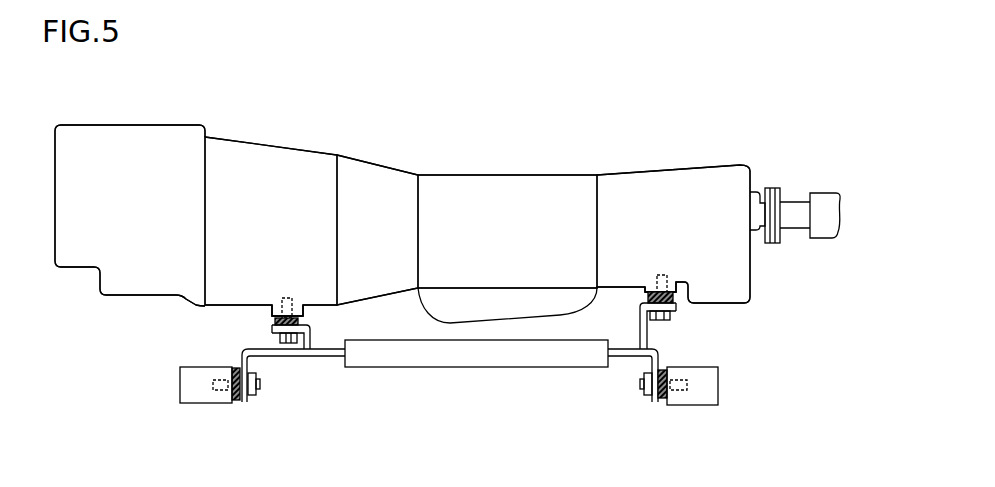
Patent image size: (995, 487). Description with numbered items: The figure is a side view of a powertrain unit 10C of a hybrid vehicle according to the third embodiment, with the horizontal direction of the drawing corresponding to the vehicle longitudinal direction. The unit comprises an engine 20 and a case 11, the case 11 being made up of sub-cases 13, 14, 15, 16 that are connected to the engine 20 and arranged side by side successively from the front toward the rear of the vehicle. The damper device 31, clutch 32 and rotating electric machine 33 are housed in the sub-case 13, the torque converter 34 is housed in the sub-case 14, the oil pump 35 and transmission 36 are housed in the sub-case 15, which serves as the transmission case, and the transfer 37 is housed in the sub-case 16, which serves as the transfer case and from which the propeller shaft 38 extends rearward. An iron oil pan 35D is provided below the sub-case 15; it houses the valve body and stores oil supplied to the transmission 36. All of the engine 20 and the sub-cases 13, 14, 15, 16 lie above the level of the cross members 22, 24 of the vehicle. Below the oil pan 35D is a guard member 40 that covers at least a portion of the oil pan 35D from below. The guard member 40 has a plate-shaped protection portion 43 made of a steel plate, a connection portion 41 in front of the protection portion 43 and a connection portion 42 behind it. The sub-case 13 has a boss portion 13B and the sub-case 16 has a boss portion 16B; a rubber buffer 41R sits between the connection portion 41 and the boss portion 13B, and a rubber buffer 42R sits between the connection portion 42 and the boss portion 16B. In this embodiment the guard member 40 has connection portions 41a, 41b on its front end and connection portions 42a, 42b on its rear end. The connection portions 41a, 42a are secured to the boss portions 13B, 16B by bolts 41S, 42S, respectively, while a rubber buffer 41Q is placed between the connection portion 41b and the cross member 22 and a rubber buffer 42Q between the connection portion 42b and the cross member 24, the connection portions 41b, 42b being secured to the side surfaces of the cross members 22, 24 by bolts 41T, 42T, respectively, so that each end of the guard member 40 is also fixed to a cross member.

The powertrain unit 10C is at (722, 123).
The case 11 is at (260, 83).
The sub-case 13 is at (271, 199).
The boss portion 13B is at (272, 312).
The sub-case 14 is at (377, 193).
The sub-case 15 is at (507, 185).
The sub-case 16 is at (673, 192).
The boss portion 16B is at (672, 289).
The engine 20 is at (140, 211).
The cross member 22 is at (203, 404).
The cross member 24 is at (693, 406).
The damper device 31 is at (271, 226).
The clutch 32 is at (271, 226).
The rotating electric machine 33 is at (315, 252).
The torque converter 34 is at (392, 254).
The oil pump 35 is at (507, 231).
The transmission 36 is at (538, 254).
The oil pan 35D is at (500, 305).
The transfer 37 is at (688, 254).
The propeller shaft 38 is at (826, 215).
The guard member 40 is at (450, 382).
The connection portion 41 is at (241, 378).
The buffer 41R is at (298, 321).
The bolt 41S is at (280, 338).
The bolt 41T is at (249, 374).
The buffer 41Q is at (233, 392).
The connection portion 41a is at (308, 340).
The connection portion 41b is at (283, 358).
The connection portion 42 is at (689, 368).
The buffer 42R is at (648, 294).
The bolt 42S is at (670, 314).
The bolt 42T is at (644, 375).
The buffer 42Q is at (667, 393).
The connection portion 42a is at (640, 336).
The connection portion 42b is at (655, 398).
The protection portion 43 is at (477, 352).